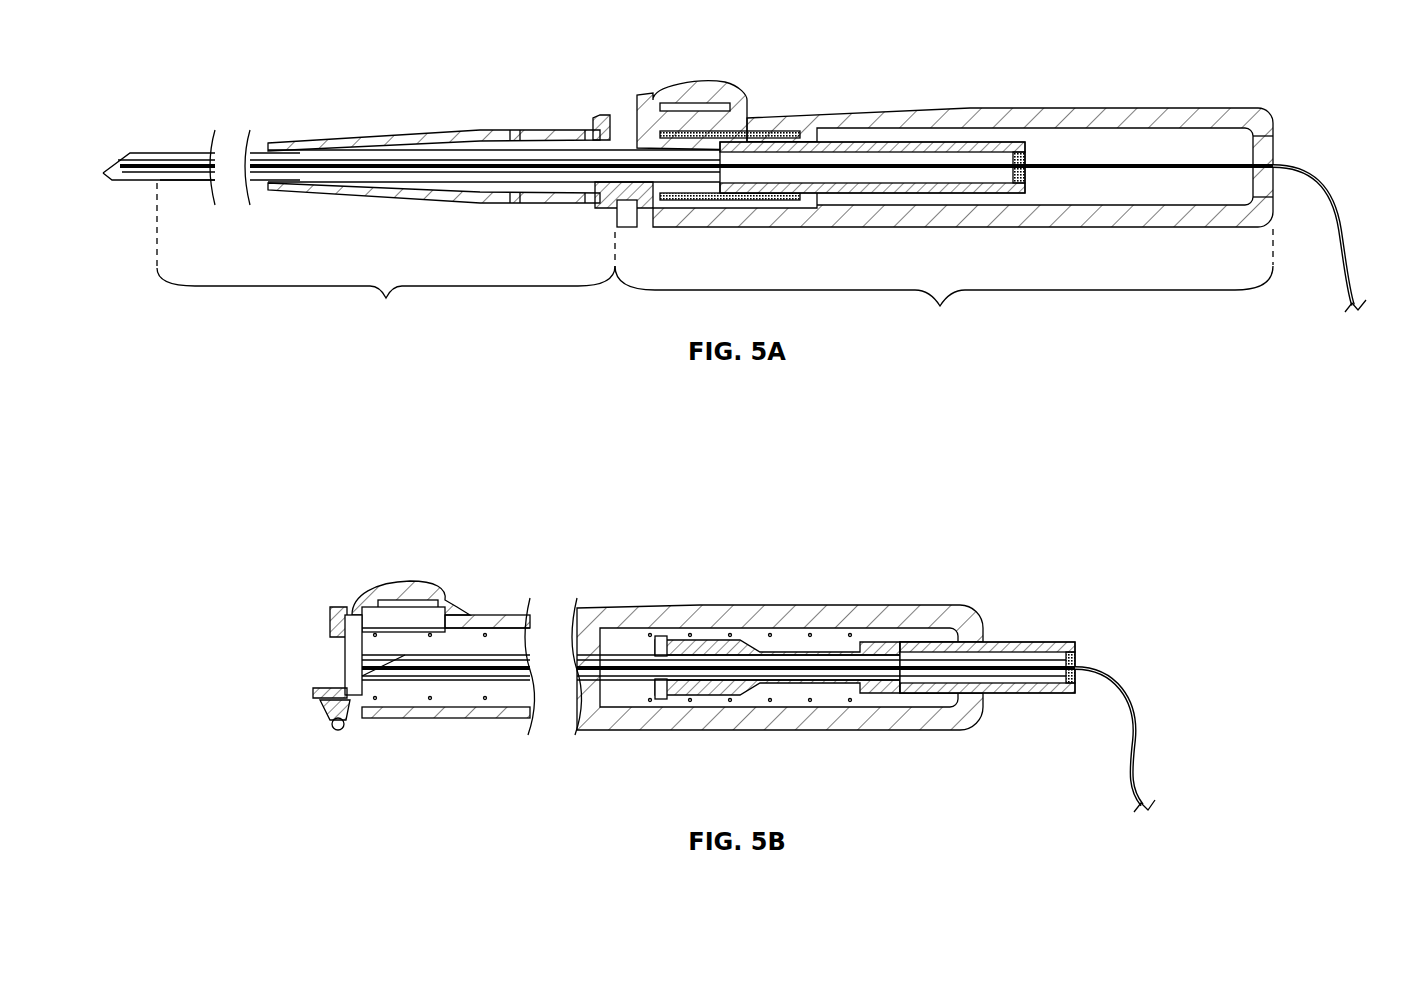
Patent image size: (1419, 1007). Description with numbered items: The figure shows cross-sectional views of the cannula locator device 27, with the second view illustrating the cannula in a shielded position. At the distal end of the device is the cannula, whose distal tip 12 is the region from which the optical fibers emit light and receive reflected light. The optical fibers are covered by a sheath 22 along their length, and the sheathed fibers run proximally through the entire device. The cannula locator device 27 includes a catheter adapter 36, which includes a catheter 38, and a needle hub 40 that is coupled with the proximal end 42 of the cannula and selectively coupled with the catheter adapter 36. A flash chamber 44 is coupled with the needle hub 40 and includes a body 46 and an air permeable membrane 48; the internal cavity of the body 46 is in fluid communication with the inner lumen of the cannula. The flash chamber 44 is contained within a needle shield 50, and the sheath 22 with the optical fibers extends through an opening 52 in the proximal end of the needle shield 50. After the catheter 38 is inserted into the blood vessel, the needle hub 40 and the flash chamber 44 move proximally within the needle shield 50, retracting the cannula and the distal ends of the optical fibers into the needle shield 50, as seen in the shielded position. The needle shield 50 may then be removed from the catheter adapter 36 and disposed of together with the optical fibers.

In FIG. 5A, the distal tip 12 is at (115, 160).
In FIG. 5B, the distal tip 12 is at (355, 678).
In FIG. 5A, the sheath 22 is at (1190, 165).
In FIG. 5B, the sheath 22 is at (380, 490).
In FIG. 5A, the cannula locator device 27 is at (176, 94).
In FIG. 5A, the catheter adapter 36 is at (386, 260).
In FIG. 5A, the catheter 38 is at (200, 183).
In FIG. 5A, the needle hub 40 is at (675, 190).
In FIG. 5A, the proximal end 42 is at (795, 148).
In FIG. 5B, the proximal end 42 is at (843, 645).
In FIG. 5A, the flash chamber 44 is at (905, 150).
In FIG. 5B, the flash chamber 44 is at (935, 660).
In FIG. 5A, the body 46 is at (944, 292).
In FIG. 5A, the air permeable membrane 48 is at (1025, 160).
In FIG. 5B, the air permeable membrane 48 is at (1076, 680).
In FIG. 5A, the needle shield 50 is at (1060, 108).
In FIG. 5B, the needle shield 50 is at (712, 605).
In FIG. 5A, the opening 52 is at (1265, 155).